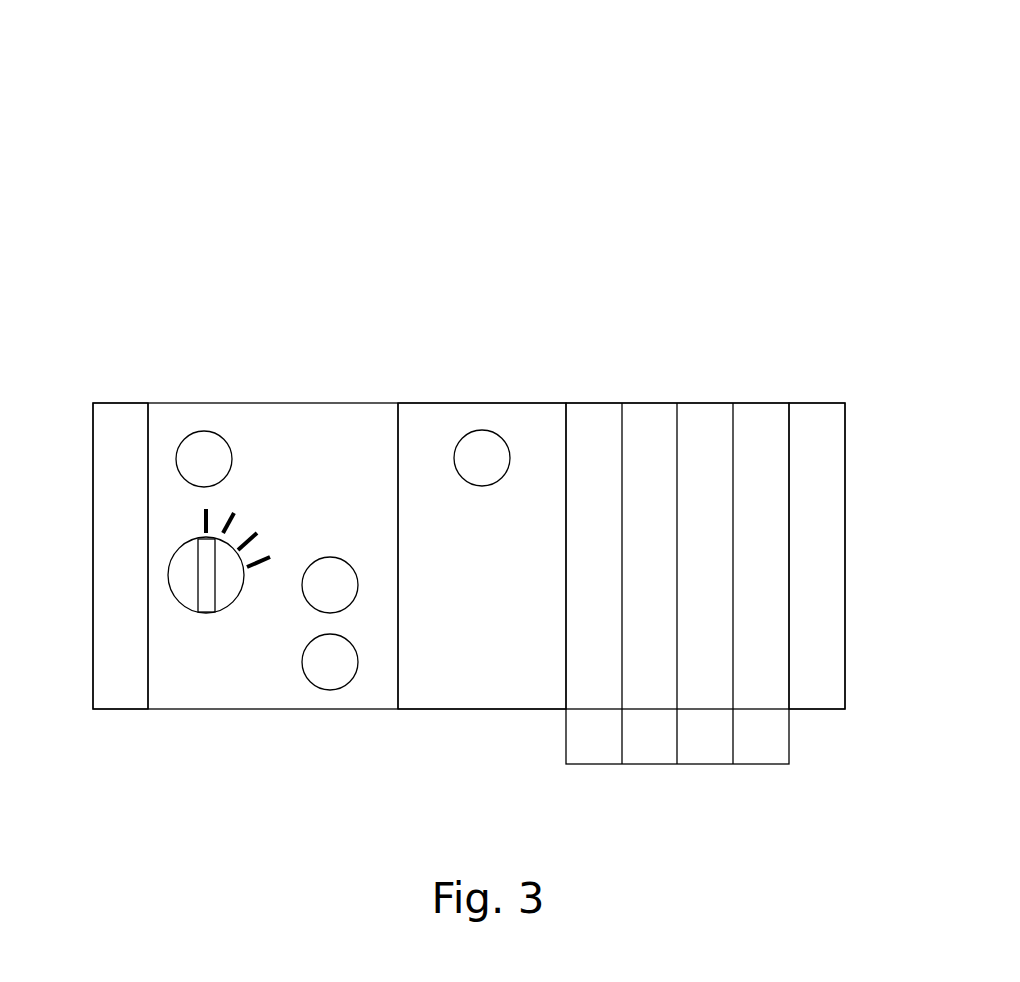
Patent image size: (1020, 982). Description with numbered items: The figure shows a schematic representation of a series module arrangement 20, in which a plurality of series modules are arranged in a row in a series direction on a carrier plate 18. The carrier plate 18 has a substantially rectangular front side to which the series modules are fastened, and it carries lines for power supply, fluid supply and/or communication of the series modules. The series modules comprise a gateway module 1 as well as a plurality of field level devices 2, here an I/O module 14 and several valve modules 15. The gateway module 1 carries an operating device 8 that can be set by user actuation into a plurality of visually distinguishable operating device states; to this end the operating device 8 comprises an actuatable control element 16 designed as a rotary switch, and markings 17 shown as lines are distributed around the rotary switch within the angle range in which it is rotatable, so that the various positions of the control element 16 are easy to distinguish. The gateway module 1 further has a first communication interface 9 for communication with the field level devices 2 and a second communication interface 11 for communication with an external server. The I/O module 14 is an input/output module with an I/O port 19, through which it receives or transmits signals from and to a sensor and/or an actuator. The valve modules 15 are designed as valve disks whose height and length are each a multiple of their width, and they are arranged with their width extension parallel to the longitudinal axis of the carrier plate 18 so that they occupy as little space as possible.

The gateway module 1 is at (275, 403).
The field level devices 2 is at (595, 537).
The operating device 8 is at (207, 612).
The first communication interface 9 is at (230, 450).
The second communication interface 11 is at (349, 564).
The I/O module 14 is at (455, 569).
The valve modules 15 is at (592, 403).
The control element 16 is at (213, 613).
The markings 17 is at (270, 527).
The carrier plate 18 is at (93, 490).
The I/O port 19 is at (495, 482).
The series module arrangement 20 is at (769, 108).